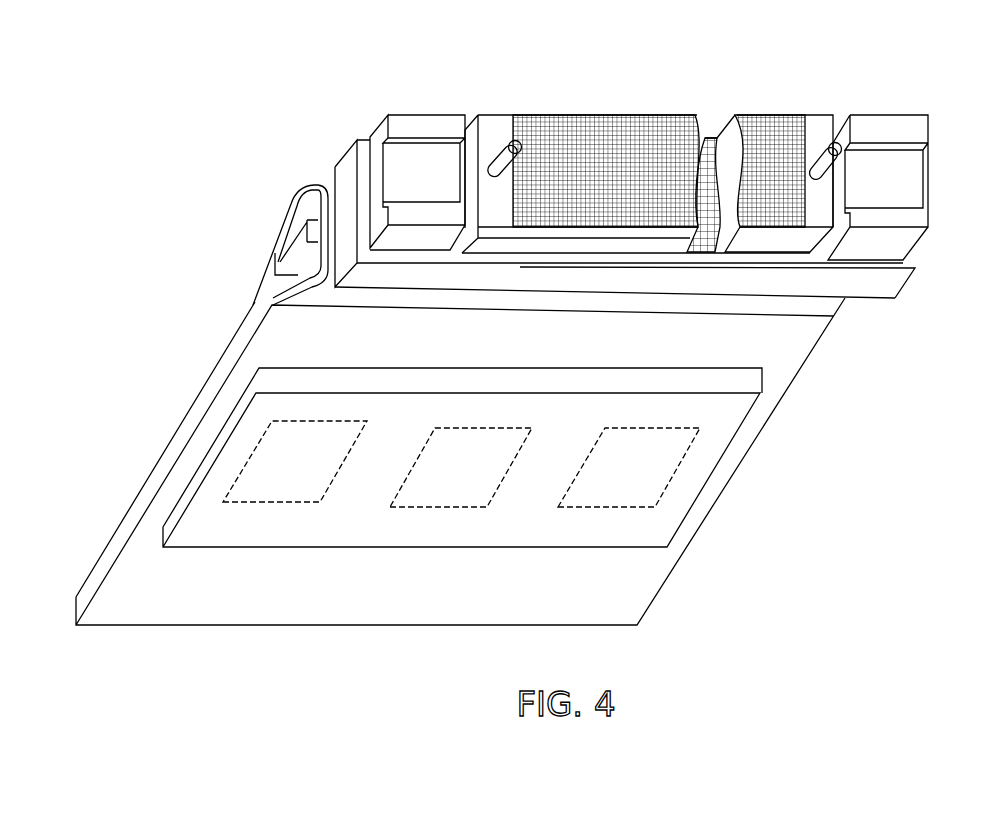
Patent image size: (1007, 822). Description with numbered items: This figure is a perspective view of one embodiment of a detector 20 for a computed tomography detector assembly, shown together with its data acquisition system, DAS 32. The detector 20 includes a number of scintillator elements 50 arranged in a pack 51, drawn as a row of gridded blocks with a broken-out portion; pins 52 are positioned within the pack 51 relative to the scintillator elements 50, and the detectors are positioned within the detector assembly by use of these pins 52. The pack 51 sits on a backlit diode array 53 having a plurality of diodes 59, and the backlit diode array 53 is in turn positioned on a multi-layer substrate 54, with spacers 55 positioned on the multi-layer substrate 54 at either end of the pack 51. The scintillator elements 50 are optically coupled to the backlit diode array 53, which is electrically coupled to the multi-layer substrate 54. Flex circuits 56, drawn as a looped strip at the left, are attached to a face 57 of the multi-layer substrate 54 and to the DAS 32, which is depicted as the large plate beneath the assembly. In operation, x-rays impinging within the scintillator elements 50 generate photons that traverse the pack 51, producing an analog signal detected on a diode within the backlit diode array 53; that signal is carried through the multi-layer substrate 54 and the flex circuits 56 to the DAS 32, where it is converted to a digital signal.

The detector 20 is at (879, 76).
The data acquisition system 32 is at (742, 442).
The scintillator elements 50 is at (575, 115).
The pack 51 is at (518, 88).
The pins 52 is at (506, 147).
The backlit diode array 53 is at (805, 258).
The multi-layer substrate 54 is at (893, 285).
The spacers 55 is at (425, 114).
The flex circuits 56 is at (280, 262).
The face 57 is at (345, 183).
The diodes 59 is at (712, 136).